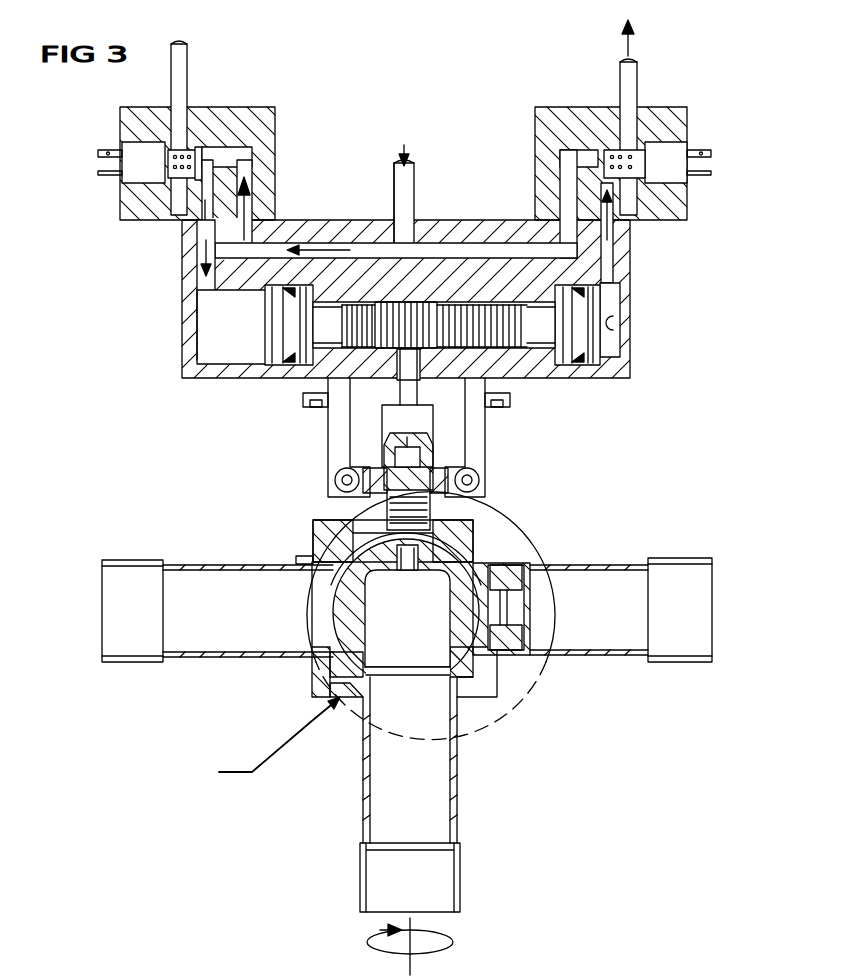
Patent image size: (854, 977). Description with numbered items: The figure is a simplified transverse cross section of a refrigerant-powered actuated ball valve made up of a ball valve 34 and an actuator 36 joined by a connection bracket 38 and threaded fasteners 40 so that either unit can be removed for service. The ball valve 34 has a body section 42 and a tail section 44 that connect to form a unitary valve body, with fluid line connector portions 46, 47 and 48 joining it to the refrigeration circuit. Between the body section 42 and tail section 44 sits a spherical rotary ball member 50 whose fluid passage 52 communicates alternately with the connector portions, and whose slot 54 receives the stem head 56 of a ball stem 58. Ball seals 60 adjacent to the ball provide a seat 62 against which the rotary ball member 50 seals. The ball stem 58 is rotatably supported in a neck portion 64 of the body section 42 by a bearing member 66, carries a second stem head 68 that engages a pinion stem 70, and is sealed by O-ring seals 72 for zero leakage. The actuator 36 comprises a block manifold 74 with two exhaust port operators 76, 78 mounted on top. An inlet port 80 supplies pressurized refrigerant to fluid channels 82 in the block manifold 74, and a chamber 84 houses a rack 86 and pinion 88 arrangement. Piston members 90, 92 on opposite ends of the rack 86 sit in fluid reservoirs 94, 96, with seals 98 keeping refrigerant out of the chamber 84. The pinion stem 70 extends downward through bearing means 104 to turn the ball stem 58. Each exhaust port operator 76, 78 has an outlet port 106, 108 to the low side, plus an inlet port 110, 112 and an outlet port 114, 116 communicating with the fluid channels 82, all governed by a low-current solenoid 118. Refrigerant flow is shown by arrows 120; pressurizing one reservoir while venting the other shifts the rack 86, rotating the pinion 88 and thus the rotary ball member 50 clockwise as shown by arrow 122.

The ball valve 34 is at (538, 724).
The actuator 36 is at (590, 440).
The connection bracket 38 is at (486, 450).
The threaded fasteners 40 is at (305, 399).
The body section 42 is at (497, 660).
The tail section 44 is at (311, 677).
The fluid line connector portion 46 is at (363, 802).
The fluid line connector portion 47 is at (178, 665).
The fluid line connector portion 48 is at (617, 655).
The rotary ball member 50 is at (406, 609).
The fluid passage 52 is at (402, 572).
The slot 54 is at (316, 574).
The stem head 56 is at (477, 523).
The ball stem 58 is at (448, 472).
The ball seals 60 is at (316, 556).
The seat 62 is at (500, 568).
The neck portion 64 is at (403, 487).
The bearing member 66 is at (395, 460).
The second stem head 68 is at (398, 440).
The pinion stem 70 is at (398, 424).
The O-ring seals 72 is at (433, 507).
The block manifold 74 is at (293, 233).
The exhaust port operator 76 is at (218, 92).
The exhaust port operator 78 is at (548, 93).
The inlet port 80 is at (417, 162).
The fluid channels 82 is at (390, 172).
The chamber 84 is at (512, 288).
The rack 86 is at (357, 312).
The pinion 88 is at (412, 305).
The piston member 90 is at (242, 310).
The piston member 92 is at (586, 310).
The fluid reservoir 94 is at (200, 335).
The fluid reservoir 96 is at (614, 322).
The seals 98 is at (270, 358).
The bearing means 104 is at (403, 390).
The outlet port 106 is at (172, 74).
The outlet port 108 is at (620, 70).
The inlet port 110 is at (243, 160).
The inlet port 112 is at (566, 165).
The outlet port 114 is at (200, 192).
The outlet port 116 is at (622, 188).
The solenoid 118 is at (122, 143).
The arrows 120 is at (200, 232).
The arrow 122 is at (428, 930).